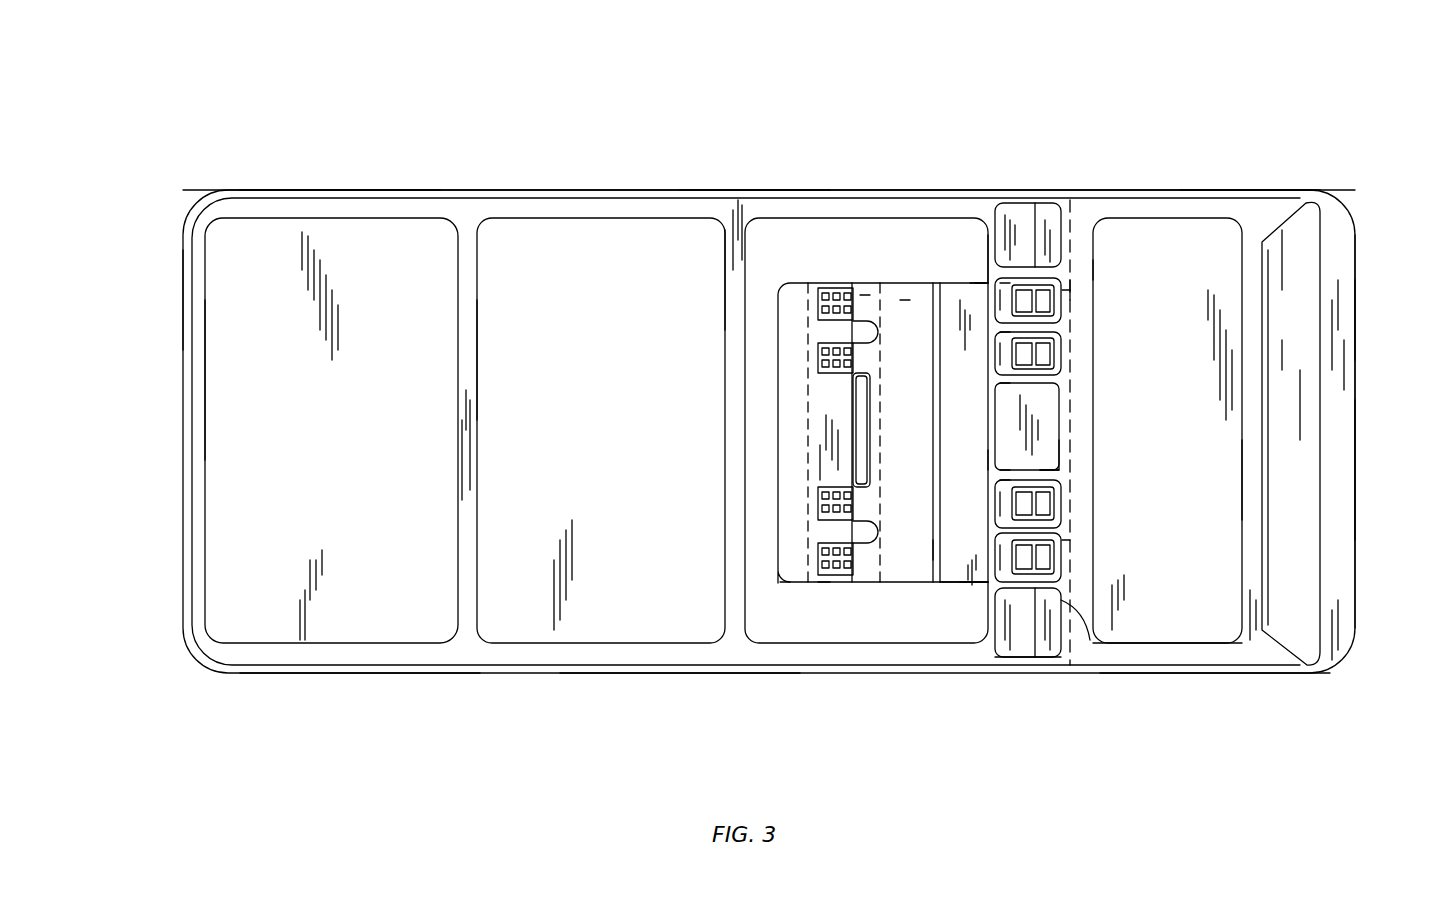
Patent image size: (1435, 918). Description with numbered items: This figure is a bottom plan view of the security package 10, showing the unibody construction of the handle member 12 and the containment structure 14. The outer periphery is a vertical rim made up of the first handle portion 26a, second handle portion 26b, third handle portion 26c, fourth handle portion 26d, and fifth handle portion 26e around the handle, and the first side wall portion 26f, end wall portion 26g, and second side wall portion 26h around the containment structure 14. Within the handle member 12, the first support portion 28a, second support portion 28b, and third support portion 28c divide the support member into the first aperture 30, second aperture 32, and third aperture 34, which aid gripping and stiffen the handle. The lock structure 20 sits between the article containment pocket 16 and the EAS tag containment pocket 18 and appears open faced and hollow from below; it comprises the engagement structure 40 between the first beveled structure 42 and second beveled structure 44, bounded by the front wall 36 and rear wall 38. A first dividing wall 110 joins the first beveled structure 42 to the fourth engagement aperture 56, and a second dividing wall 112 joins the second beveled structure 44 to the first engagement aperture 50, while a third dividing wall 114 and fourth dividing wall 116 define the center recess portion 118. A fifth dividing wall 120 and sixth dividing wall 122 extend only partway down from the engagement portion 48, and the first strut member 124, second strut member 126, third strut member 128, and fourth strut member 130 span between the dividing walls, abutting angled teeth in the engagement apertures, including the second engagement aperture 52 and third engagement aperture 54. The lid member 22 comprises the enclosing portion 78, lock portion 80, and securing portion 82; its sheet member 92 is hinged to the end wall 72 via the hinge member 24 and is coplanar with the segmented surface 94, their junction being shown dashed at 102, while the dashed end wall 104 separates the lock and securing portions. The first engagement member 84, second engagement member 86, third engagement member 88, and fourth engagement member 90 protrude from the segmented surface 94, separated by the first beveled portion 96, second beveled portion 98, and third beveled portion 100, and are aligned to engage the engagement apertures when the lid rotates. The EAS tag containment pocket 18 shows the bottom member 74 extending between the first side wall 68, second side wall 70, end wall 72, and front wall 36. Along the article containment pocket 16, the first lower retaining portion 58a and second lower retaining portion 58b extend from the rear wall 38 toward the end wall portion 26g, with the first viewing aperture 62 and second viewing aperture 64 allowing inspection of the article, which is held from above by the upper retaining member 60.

The security package 10 is at (600, 145).
The handle member 12 is at (260, 690).
The containment structure 14 is at (1127, 695).
The article containment pocket 16 is at (1336, 186).
The EAS tag containment pocket 18 is at (955, 596).
The lock structure 20 is at (1020, 685).
The lid member 22 is at (865, 228).
The hinge member 24 is at (933, 590).
The first handle portion 26a is at (684, 676).
The second handle portion 26b is at (364, 674).
The third handle portion 26c is at (190, 306).
The fourth handle portion 26d is at (330, 190).
The fifth handle portion 26e is at (755, 192).
The first side wall portion 26f is at (1255, 191).
The end wall portion 26g is at (1356, 471).
The second side wall portion 26h is at (1209, 675).
The first support portion 28a is at (205, 373).
The second support portion 28b is at (478, 361).
The third support portion 28c is at (735, 269).
The first aperture 30 is at (356, 422).
The second aperture 32 is at (586, 422).
The third aperture 34 is at (778, 257).
The front wall 36 is at (988, 212).
The rear wall 38 is at (1090, 319).
The engagement structure 40 is at (1052, 404).
The first beveled structure 42 is at (1048, 647).
The second beveled structure 44 is at (1028, 233).
The engagement portion 48 is at (1052, 436).
The first engagement aperture 50 is at (1061, 296).
The second engagement aperture 52 is at (1062, 363).
The third engagement aperture 54 is at (1062, 506).
The fourth engagement aperture 56 is at (1062, 553).
The first lower retaining portion 58a is at (1220, 204).
The second lower retaining portion 58b is at (1250, 486).
The upper retaining member 60 is at (1354, 319).
The first viewing aperture 62 is at (1196, 366).
The second viewing aperture 64 is at (1298, 331).
The first side wall 68 is at (970, 590).
The second side wall 70 is at (977, 290).
The end wall 72 is at (928, 550).
The bottom member 74 is at (982, 290).
The enclosing portion 78 is at (908, 280).
The lock portion 80 is at (783, 598).
The securing portion 82 is at (823, 598).
The first engagement member 84 is at (818, 306).
The second engagement member 86 is at (818, 359).
The third engagement member 88 is at (818, 498).
The fourth engagement member 90 is at (818, 564).
The sheet member 92 is at (897, 300).
The segmented surface 94 is at (862, 356).
The first beveled portion 96 is at (862, 333).
The second beveled portion 98 is at (860, 411).
The third beveled portion 100 is at (862, 533).
The junction between sheet member and segmented surface 102 is at (791, 282).
The end wall 104 is at (808, 446).
The first dividing wall 110 is at (1075, 642).
The second dividing wall 112 is at (1080, 280).
The third dividing wall 114 is at (1020, 400).
The fourth dividing wall 116 is at (1045, 436).
The center recess portion 118 is at (1050, 456).
The fifth dividing wall 120 is at (1061, 334).
The sixth dividing wall 122 is at (1062, 536).
The first strut member 124 is at (1018, 301).
The second strut member 126 is at (1018, 356).
The third strut member 128 is at (1018, 501).
The fourth strut member 130 is at (975, 600).